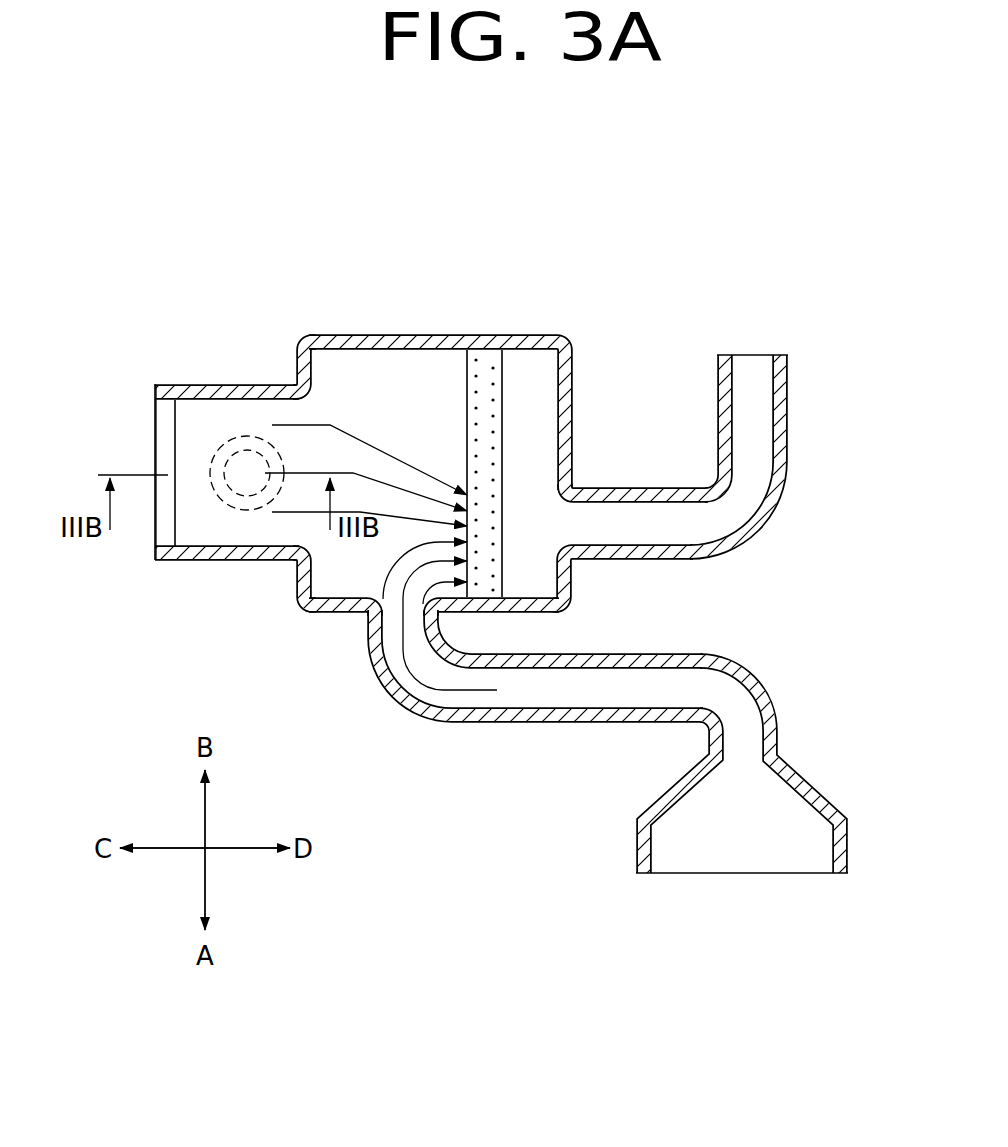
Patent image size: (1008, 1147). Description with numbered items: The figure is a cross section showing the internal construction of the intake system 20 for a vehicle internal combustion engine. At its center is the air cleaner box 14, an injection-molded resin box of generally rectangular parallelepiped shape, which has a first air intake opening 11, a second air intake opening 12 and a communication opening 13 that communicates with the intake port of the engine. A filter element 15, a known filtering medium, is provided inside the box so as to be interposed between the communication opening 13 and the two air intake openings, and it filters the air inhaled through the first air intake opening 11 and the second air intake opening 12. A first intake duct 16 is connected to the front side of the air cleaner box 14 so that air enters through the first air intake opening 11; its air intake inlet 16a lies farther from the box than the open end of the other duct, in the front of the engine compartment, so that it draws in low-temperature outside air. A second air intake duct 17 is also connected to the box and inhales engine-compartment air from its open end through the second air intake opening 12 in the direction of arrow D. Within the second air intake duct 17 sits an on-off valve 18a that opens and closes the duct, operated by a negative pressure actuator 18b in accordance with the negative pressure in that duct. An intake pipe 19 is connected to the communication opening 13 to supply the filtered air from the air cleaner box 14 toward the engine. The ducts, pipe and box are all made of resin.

The first air intake opening 11 is at (377, 588).
The second air intake opening 12 is at (303, 416).
The communication opening 13 is at (562, 522).
The air cleaner box 14 is at (393, 340).
The filter element 15 is at (480, 362).
The first intake duct 16 is at (480, 727).
The air intake inlet 16a is at (725, 875).
The second air intake duct 17 is at (187, 383).
The on-off valve 18a is at (190, 437).
The negative pressure actuator 18b is at (237, 508).
The intake pipe 19 is at (787, 434).
The fuel filter unit 20 is at (760, 275).